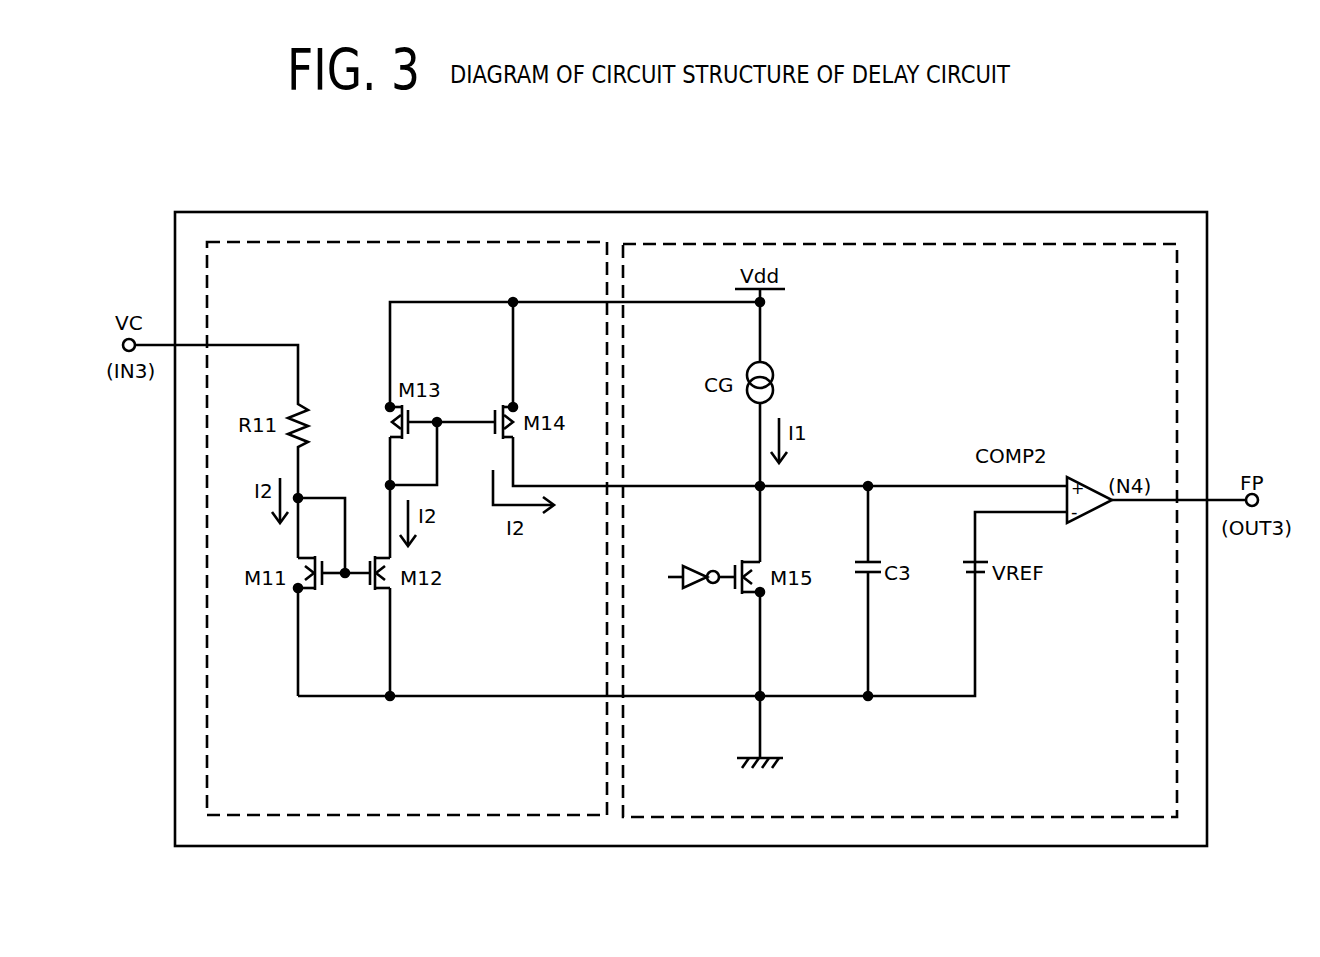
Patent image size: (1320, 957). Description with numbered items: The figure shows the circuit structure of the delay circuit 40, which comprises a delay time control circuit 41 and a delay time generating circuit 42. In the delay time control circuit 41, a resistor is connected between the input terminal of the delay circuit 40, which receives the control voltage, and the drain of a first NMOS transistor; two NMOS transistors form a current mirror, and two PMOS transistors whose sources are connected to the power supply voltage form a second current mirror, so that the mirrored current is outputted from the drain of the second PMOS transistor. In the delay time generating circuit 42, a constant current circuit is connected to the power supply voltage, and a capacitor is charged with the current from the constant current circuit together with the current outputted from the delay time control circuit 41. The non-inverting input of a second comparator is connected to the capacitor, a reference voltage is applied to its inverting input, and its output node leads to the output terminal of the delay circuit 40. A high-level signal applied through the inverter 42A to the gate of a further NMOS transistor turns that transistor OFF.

The delay circuit 40 is at (1226, 235).
The delay time control circuit 41 is at (452, 241).
The delay time generating circuit 42 is at (978, 243).
The inverter 42A is at (692, 563).